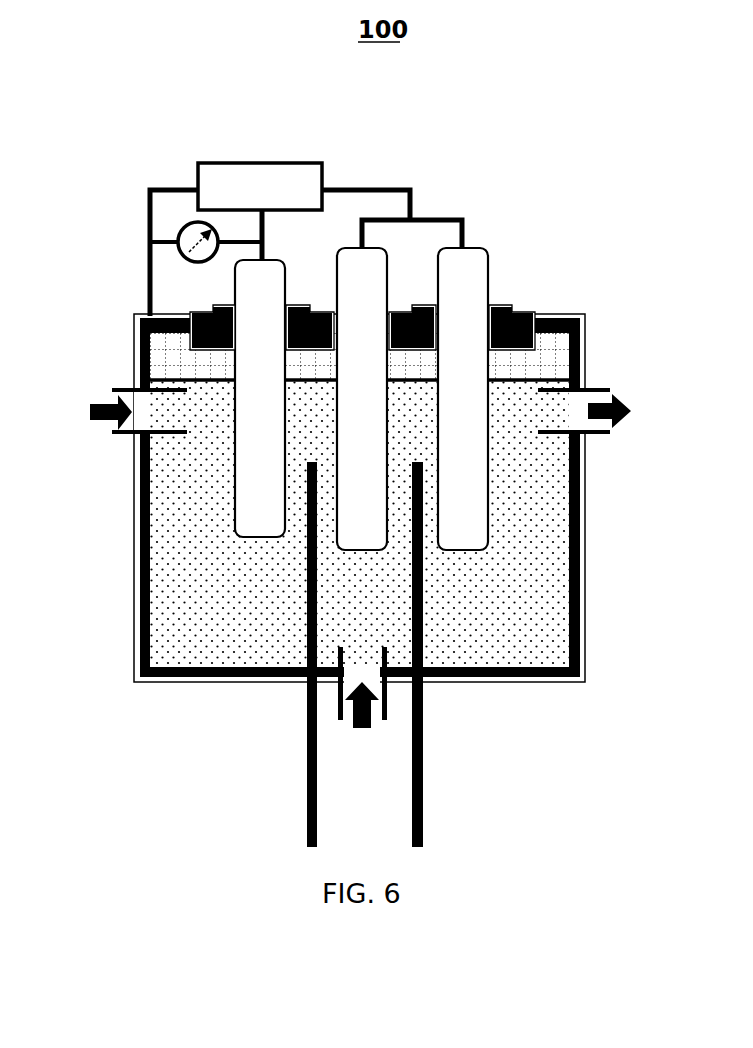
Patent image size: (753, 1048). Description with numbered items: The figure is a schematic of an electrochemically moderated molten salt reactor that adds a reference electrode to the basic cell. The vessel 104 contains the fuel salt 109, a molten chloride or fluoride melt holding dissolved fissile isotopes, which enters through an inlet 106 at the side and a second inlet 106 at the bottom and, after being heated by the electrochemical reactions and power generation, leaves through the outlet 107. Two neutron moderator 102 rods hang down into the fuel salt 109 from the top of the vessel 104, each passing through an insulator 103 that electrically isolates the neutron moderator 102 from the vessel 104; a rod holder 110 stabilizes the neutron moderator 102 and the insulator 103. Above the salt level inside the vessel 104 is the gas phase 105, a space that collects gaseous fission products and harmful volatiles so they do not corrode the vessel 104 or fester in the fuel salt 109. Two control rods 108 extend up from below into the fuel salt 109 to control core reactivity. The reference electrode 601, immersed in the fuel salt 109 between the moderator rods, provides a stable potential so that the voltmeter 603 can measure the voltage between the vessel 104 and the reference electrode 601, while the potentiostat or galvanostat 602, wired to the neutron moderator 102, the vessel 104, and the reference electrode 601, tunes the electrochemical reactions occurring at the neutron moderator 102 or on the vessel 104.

The neutron moderator 102 is at (412, 399).
The insulator 103 is at (330, 300).
The vessel 104 is at (587, 357).
The gas phase 105 is at (359, 356).
The inlet 106 is at (216, 575).
The outlet 107 is at (608, 411).
The control rods 108 is at (304, 797).
The fuel salt 109 is at (359, 523).
The rod holder 110 is at (525, 300).
The reference electrode 601 is at (260, 398).
The potentiostat or galvanostat 602 is at (267, 158).
The voltmeter 603 is at (178, 232).